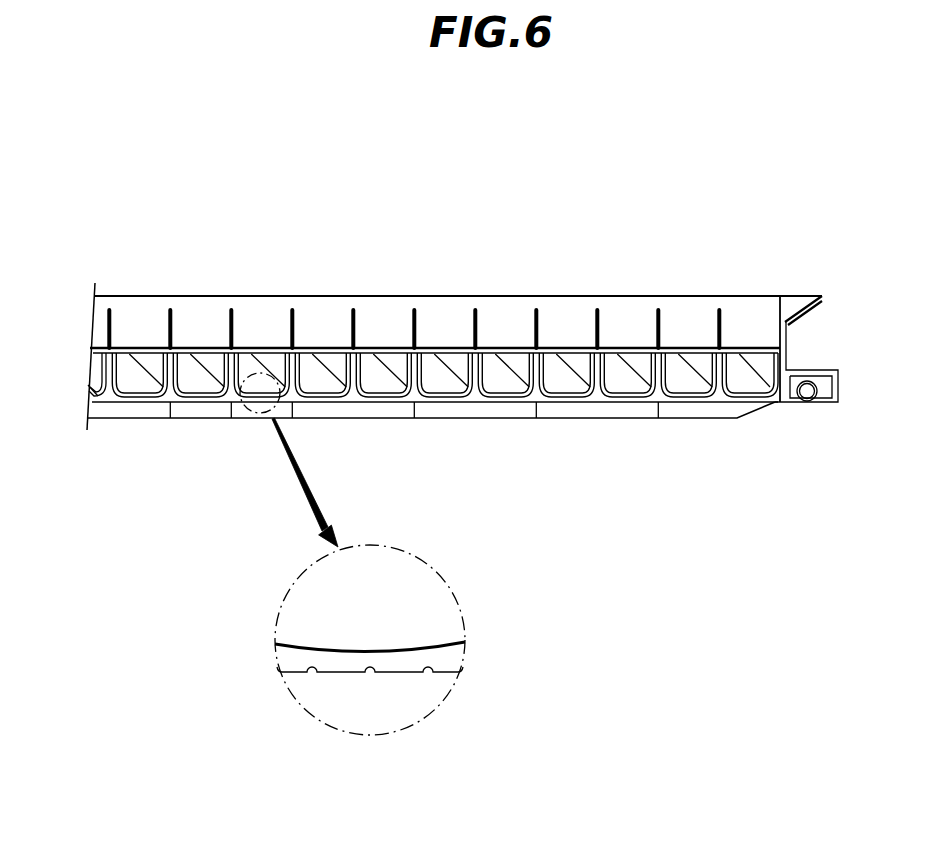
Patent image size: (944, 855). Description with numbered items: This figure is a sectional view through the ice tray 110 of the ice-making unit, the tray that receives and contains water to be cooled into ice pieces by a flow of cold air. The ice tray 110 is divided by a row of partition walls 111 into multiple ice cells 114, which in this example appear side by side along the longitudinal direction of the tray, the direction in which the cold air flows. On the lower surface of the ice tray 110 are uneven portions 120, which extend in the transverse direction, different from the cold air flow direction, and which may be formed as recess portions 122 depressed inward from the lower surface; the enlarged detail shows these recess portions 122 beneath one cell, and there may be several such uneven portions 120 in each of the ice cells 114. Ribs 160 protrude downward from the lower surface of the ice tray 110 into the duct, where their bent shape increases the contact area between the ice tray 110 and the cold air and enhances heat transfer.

The ice tray 110 is at (505, 268).
The partition walls 111 is at (294, 362).
The ice cells 114 is at (150, 324).
The uneven portions 120 is at (618, 400).
The recess portions 122 is at (428, 677).
The ribs 160 is at (380, 352).